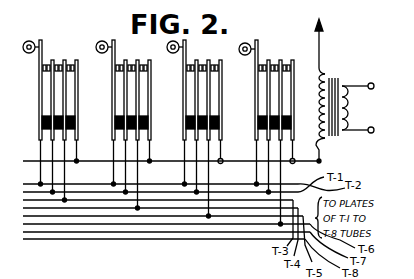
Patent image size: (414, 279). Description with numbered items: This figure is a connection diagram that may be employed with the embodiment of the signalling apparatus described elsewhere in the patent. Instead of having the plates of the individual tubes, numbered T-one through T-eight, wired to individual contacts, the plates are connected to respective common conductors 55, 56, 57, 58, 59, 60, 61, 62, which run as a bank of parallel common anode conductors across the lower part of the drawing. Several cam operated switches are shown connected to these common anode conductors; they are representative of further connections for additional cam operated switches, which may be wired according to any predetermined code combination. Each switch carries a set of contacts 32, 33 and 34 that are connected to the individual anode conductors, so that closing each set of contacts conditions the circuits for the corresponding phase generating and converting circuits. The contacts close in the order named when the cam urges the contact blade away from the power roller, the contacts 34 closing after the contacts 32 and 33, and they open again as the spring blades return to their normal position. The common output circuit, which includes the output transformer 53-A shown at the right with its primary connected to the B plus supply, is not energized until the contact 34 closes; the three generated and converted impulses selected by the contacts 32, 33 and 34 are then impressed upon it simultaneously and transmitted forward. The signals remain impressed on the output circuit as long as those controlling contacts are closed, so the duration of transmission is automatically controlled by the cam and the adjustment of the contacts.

The contact 32 is at (52, 60).
The contact 33 is at (64, 60).
The contact 34 is at (74, 60).
The output transformer 53-A is at (338, 80).
The common conductor 55 is at (288, 184).
The common conductor 56 is at (304, 192).
The common conductor 57 is at (226, 200).
The common conductor 58 is at (245, 208).
The common conductor 59 is at (229, 217).
The common conductor 60 is at (237, 225).
The common conductor 61 is at (245, 233).
The common conductor 62 is at (256, 240).